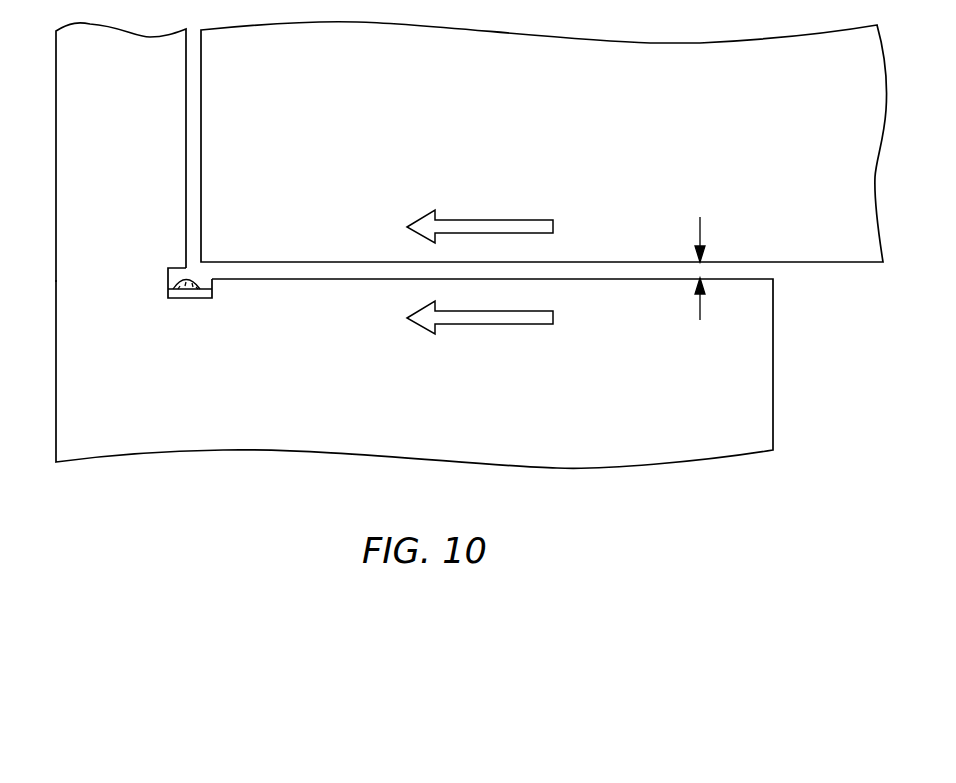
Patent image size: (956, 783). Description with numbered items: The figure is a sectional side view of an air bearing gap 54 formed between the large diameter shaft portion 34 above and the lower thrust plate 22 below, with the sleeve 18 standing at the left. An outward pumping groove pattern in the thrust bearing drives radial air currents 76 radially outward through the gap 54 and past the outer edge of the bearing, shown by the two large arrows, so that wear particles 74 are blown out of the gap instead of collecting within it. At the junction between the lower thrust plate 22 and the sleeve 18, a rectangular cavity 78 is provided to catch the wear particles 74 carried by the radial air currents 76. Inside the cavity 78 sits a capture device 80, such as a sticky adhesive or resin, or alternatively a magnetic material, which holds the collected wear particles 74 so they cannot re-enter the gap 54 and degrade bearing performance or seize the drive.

The sleeve 18 is at (131, 113).
The lower thrust plate 22 is at (386, 424).
The large diameter shaft portion 34 is at (338, 84).
The gap 54 is at (700, 282).
The wear particles 74 is at (168, 282).
The radial air currents 76 is at (455, 220).
The cavity 78 is at (172, 270).
The capture device 80 is at (194, 293).